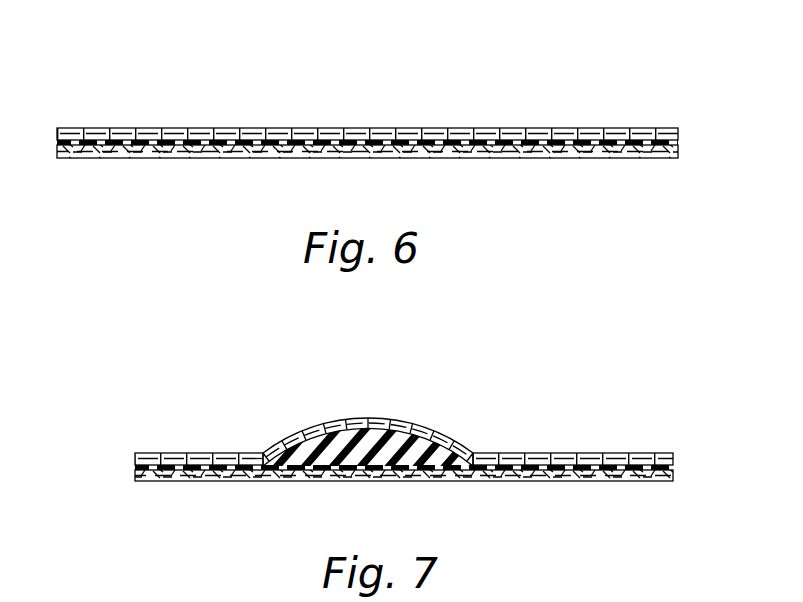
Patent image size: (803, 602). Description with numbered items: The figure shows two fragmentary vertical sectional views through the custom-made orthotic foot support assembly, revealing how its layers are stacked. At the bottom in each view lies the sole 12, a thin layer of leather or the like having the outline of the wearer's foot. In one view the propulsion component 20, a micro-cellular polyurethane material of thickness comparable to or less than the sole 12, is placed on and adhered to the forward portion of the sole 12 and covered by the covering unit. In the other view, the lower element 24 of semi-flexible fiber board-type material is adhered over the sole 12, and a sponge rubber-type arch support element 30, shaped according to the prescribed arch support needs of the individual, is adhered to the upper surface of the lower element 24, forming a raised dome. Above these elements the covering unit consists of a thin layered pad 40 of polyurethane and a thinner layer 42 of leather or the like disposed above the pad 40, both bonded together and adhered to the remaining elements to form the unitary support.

In FIG. 6, the sole 12 is at (228, 160).
In FIG. 7, the sole 12 is at (253, 483).
In FIG. 6, the propulsion component 20 is at (349, 154).
In FIG. 7, the lower element 24 is at (404, 470).
In FIG. 7, the arch support element 30 is at (368, 435).
In FIG. 6, the pad 40 is at (355, 128).
In FIG. 7, the pad 40 is at (638, 453).
In FIG. 6, the layer 42 is at (279, 128).
In FIG. 7, the layer 42 is at (552, 453).